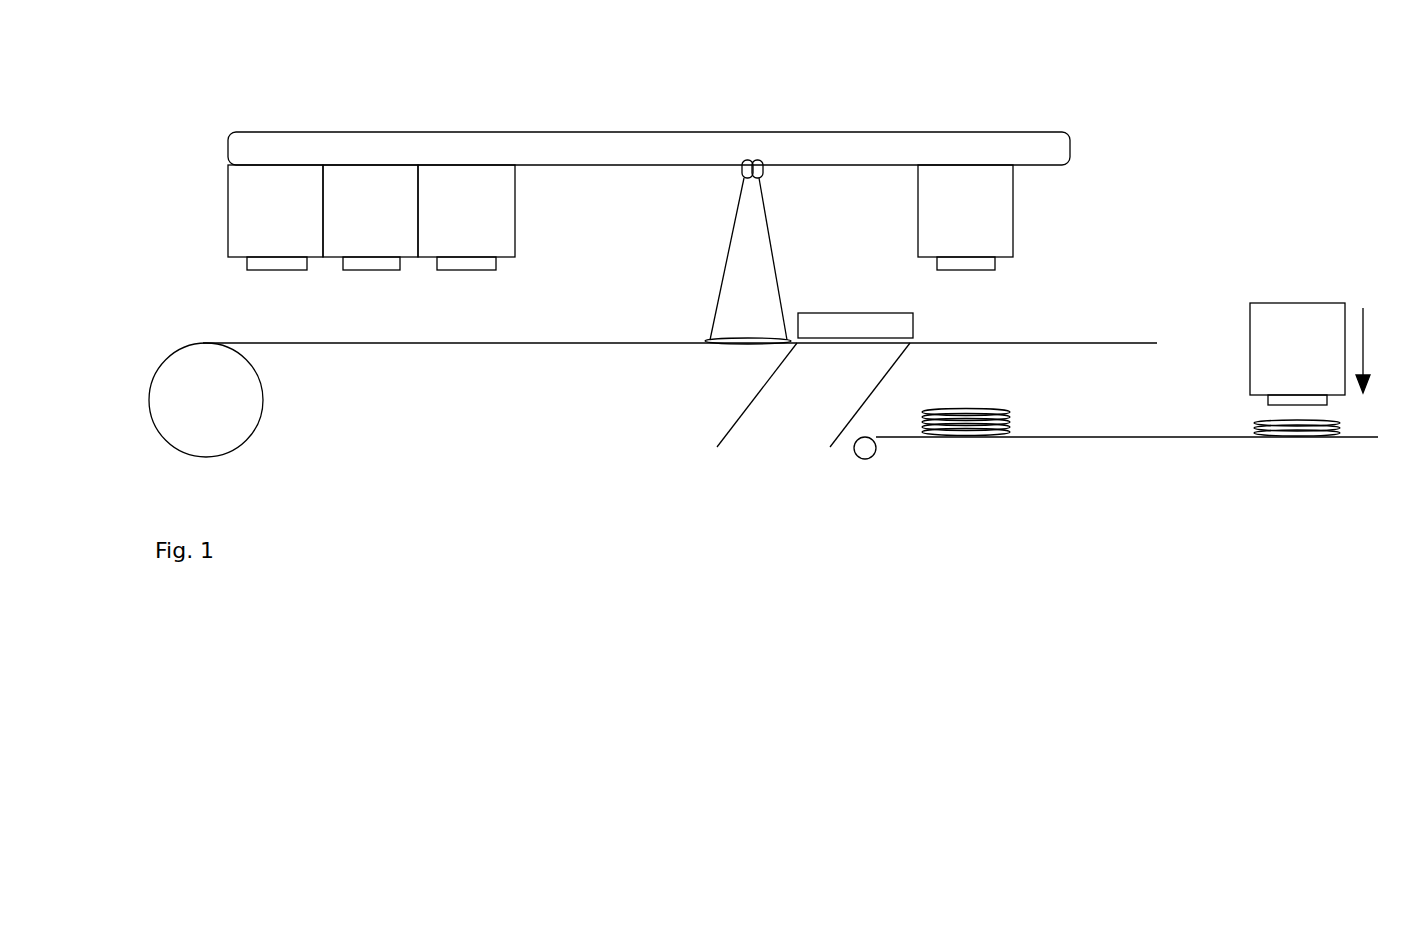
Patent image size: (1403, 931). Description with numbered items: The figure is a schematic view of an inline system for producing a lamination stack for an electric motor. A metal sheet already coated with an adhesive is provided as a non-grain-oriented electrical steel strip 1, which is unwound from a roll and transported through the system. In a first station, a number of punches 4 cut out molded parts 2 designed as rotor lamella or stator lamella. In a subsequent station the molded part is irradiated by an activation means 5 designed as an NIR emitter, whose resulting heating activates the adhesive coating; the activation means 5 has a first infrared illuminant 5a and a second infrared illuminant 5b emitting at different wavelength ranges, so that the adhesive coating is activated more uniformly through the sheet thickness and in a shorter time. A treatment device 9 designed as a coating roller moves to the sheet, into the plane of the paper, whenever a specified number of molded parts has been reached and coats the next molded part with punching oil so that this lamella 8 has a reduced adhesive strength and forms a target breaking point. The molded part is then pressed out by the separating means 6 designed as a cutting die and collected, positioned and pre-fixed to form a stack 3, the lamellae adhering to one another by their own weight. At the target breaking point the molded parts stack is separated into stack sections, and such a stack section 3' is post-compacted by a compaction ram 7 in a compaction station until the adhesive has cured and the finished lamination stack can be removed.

The non-grain-oriented electrical steel strip 1 is at (203, 343).
The molded part 2 is at (965, 410).
The stack 3 is at (985, 423).
The stack section 3' is at (1315, 427).
The punches 4 is at (497, 207).
The activation means / NIR emitter 5 is at (786, 172).
The first infrared illuminant 5a is at (746, 161).
The second infrared illuminant 5b is at (758, 160).
The separating means 6 is at (995, 213).
The compaction ram 7 is at (1290, 315).
The lamella 8 is at (922, 422).
The treatment device 9 is at (876, 328).